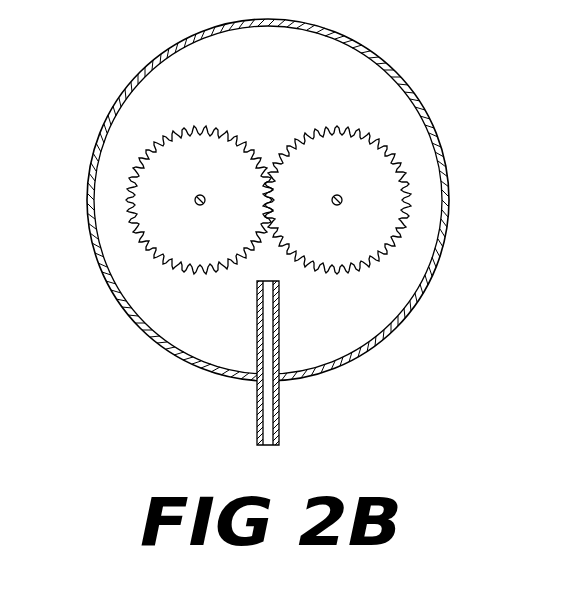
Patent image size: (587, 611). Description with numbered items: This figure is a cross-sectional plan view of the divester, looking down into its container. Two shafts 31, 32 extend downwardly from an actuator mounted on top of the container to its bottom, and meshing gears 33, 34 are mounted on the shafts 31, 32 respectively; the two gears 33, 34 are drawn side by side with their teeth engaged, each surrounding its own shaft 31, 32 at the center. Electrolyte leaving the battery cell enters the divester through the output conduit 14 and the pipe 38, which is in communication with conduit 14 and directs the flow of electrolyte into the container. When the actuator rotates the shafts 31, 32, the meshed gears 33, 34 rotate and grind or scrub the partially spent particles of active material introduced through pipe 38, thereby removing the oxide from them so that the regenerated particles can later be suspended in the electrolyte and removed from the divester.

The output conduit 14 is at (282, 425).
The shaft 31 is at (203, 210).
The shaft 32 is at (339, 210).
The meshing gear 33 is at (167, 180).
The meshing gear 34 is at (360, 148).
The pipe 38 is at (282, 310).